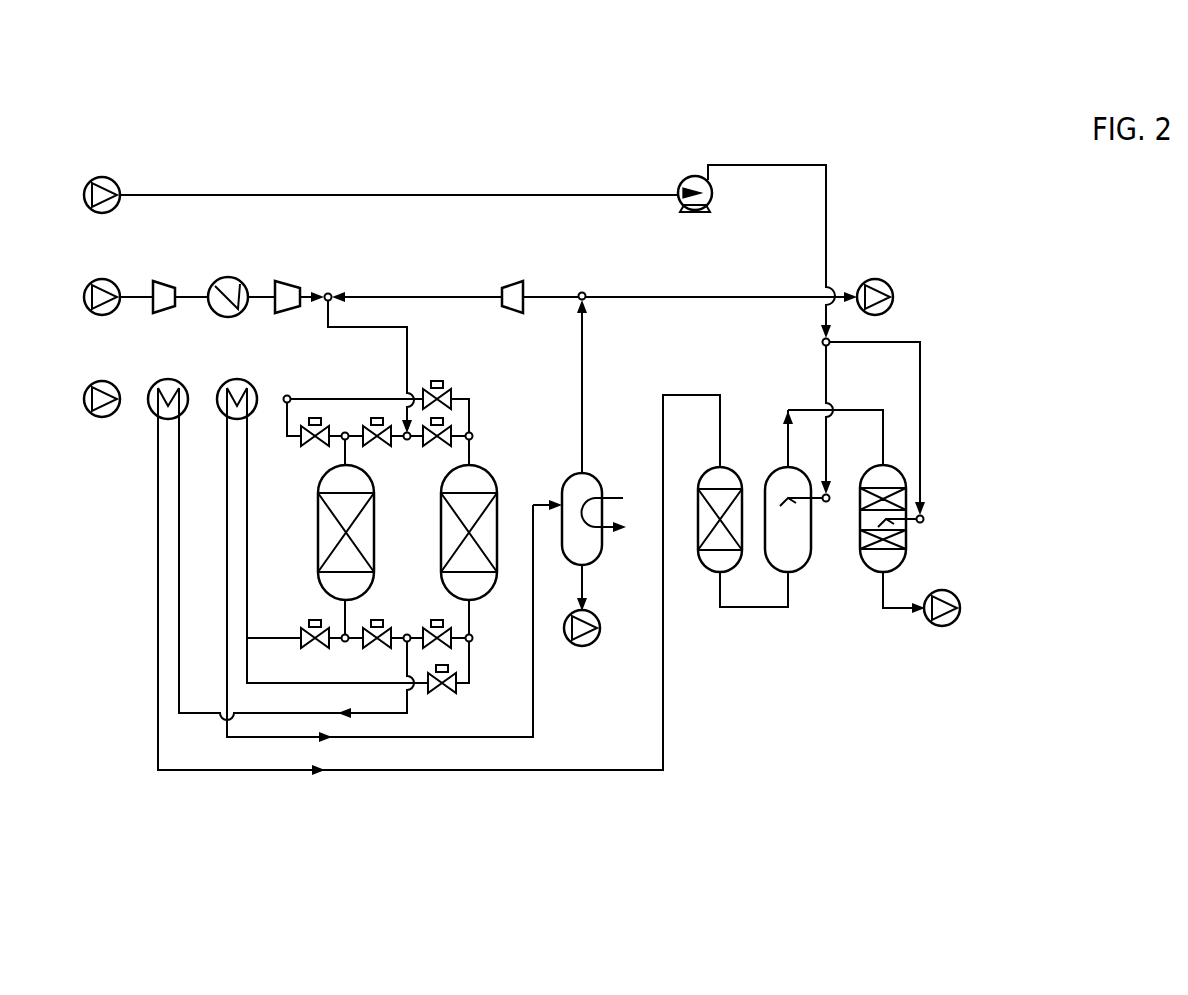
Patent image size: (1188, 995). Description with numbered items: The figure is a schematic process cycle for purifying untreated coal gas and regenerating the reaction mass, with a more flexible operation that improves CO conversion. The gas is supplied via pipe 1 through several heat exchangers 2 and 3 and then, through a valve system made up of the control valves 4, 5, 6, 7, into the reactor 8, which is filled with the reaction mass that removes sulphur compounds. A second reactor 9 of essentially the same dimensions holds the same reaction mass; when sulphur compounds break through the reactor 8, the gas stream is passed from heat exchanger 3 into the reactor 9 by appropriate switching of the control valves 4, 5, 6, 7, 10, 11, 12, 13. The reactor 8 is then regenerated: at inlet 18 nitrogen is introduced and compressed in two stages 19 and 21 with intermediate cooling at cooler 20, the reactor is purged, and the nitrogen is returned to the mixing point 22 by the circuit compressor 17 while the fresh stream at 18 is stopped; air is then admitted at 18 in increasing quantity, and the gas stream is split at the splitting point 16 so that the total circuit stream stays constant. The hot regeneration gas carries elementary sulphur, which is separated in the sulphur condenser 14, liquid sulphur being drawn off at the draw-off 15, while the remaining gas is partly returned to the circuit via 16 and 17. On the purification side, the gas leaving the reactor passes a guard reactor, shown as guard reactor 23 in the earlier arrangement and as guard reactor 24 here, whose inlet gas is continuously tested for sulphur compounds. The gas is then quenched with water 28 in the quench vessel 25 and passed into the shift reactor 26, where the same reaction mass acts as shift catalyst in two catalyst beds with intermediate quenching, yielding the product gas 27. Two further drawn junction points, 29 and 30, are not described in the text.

The pipe 1 is at (111, 383).
The heat exchanger 2 is at (176, 381).
The heat exchanger 3 is at (244, 381).
The control valve 4 is at (438, 379).
The control valve 5 is at (310, 447).
The control valve 6 is at (375, 447).
The control valve 7 is at (435, 447).
The reactor 8 is at (317, 540).
The reactor 9 is at (440, 540).
The control valve 10 is at (313, 618).
The control valve 11 is at (378, 618).
The control valve 12 is at (435, 618).
The control valve 13 is at (440, 694).
The sulphur condenser 14 is at (562, 495).
The liquid sulphur draw-off 15 is at (581, 646).
The gas stream splitting point 16 is at (584, 291).
The circuit compressor 17 is at (510, 278).
The nitrogen and air inlet 18 is at (111, 283).
The first compression stage 19 is at (173, 285).
The intermediate cooler 20 is at (236, 280).
The second compression stage 21 is at (288, 280).
The mixing point 22 is at (331, 291).
The guard reactor 23 is at (893, 297).
The guard reactor 24 is at (706, 573).
The quench vessel 25 is at (803, 573).
The shift reactor 26 is at (907, 546).
The product gas 27 is at (936, 626).
The water 28 is at (110, 180).
The pump 29 is at (703, 212).
The junction 30 is at (822, 342).